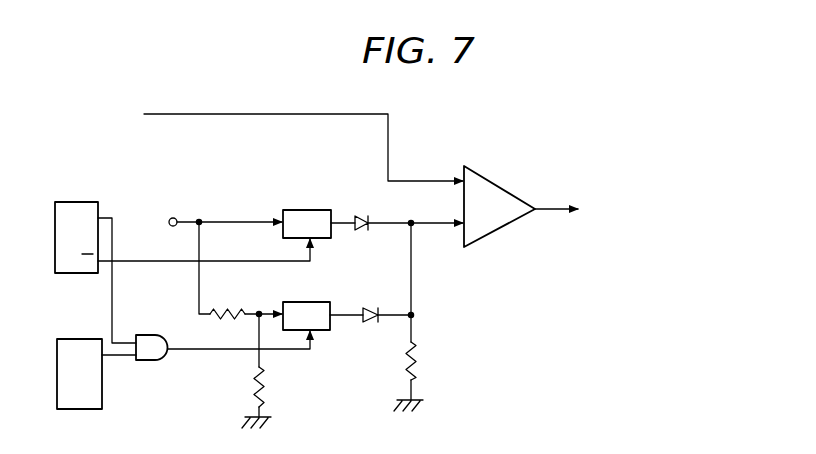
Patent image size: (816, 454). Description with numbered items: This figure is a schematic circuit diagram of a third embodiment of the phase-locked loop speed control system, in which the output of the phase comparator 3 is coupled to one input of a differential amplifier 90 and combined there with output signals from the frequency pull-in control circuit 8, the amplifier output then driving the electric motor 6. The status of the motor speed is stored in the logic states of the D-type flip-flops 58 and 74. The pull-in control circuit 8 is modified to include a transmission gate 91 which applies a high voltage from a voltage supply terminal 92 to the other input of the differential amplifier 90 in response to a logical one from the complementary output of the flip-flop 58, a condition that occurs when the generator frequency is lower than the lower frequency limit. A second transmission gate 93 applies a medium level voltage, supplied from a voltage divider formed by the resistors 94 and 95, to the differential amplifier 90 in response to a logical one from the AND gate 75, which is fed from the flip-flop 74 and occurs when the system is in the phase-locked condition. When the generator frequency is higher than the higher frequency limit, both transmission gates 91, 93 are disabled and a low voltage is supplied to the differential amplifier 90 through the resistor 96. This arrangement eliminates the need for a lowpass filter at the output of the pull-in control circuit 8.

The phase comparator 3 is at (258, 130).
The electric motor 6 is at (630, 209).
The frequency pull-in control circuit 8 is at (189, 428).
The D-type flip-flop 58 is at (83, 202).
The D-type flip-flop 74 is at (82, 339).
The AND gate 75 is at (150, 335).
The differential amplifier 90 is at (497, 185).
The transmission gate 91 is at (310, 210).
The voltage supply terminal 92 is at (174, 218).
The second transmission gate 93 is at (313, 302).
The resistor 94 is at (231, 310).
The resistor 95 is at (270, 375).
The resistor 96 is at (420, 352).